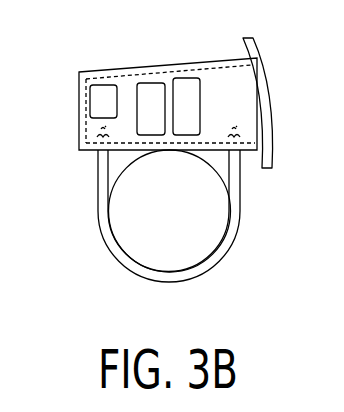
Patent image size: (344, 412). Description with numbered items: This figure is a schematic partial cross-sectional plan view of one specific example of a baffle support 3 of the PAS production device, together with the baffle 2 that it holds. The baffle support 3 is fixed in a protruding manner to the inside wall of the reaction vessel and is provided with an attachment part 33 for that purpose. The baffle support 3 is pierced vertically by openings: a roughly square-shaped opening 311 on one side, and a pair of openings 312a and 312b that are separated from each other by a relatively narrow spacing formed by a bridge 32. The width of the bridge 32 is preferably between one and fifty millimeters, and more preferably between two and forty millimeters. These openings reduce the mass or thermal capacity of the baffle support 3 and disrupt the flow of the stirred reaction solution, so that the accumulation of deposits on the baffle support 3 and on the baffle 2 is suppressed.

The baffle 2 is at (217, 210).
The baffle support 3 is at (85, 128).
The opening 311 is at (99, 86).
The opening 312a is at (146, 86).
The opening 312b is at (192, 87).
The bridge 32 is at (165, 63).
The attachment part 33 is at (252, 61).